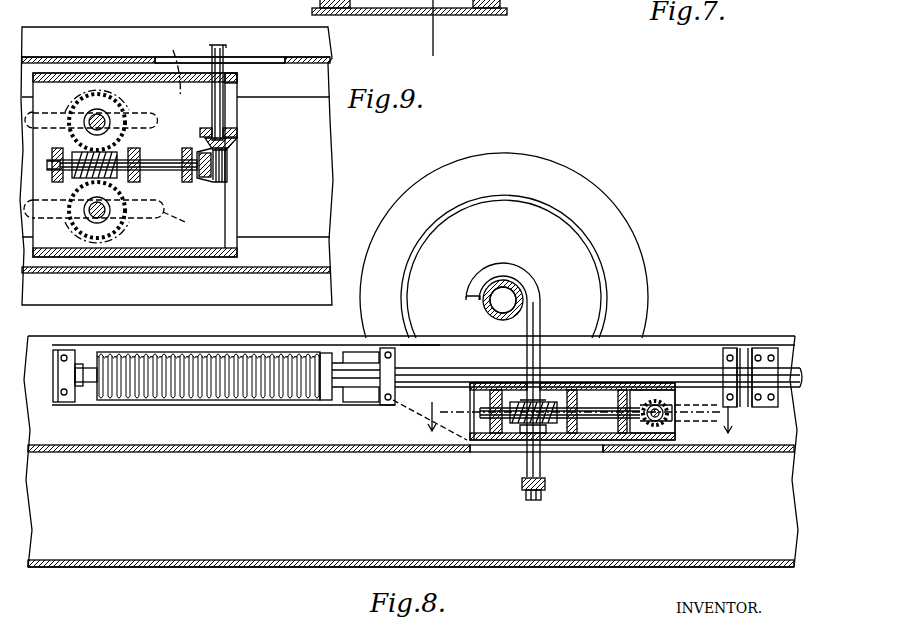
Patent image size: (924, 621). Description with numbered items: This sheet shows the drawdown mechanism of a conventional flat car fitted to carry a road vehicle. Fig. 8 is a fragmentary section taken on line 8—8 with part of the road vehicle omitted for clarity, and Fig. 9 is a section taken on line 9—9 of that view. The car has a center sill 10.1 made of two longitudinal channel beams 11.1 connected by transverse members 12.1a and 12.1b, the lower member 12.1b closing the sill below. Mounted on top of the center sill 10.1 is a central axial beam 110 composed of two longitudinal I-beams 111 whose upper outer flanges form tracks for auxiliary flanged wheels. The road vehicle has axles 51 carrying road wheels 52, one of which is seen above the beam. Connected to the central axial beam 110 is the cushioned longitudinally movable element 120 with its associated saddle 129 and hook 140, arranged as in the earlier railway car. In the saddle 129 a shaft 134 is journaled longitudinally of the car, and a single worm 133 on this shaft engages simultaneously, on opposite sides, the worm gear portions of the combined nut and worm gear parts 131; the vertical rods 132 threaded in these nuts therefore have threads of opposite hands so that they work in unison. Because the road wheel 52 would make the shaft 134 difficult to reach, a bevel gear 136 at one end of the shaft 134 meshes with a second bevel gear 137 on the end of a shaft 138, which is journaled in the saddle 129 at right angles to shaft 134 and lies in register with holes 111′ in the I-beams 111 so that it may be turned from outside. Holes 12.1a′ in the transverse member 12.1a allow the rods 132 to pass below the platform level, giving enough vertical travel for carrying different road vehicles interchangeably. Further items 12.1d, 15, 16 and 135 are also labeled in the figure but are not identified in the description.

In FIG. 9, the section line 8— 8 is at (414, 48).
In FIG. 8, the section line 9— 9 is at (570, 420).
In FIG. 9, the center sill 10.1 is at (481, 20).
In FIG. 8, the longitudinal channel beams 11.1 is at (411, 451).
In FIG. 8, the transverse member 12.1a is at (263, 449).
In FIG. 9, the holes 12.1a′ is at (166, 64).
In FIG. 8, the holes 12.1a′ is at (587, 453).
In FIG. 9, the transverse member 12.1b is at (428, 16).
In FIG. 8, the transverse member 12.1b is at (222, 567).
In FIG. 9, the guide slot 12.1d is at (128, 177).
In FIG. 8, the bracket 15 is at (105, 408).
In FIG. 8, the mounting bracket 16 is at (765, 348).
In FIG. 8, the axles 51 is at (523, 296).
In FIG. 8, the road wheels 52 is at (422, 184).
In FIG. 9, the central axial beam 110 is at (318, 42).
In FIG. 9, the longitudinal I-beams 111 is at (70, 55).
In FIG. 8, the longitudinal I-beams 111 is at (415, 337).
In FIG. 9, the holes 111′ is at (278, 48).
In FIG. 8, the holes 111′ is at (710, 420).
In FIG. 8, the cushioned longitudinally movable element 120 is at (222, 415).
In FIG. 9, the saddle 129 is at (230, 202).
In FIG. 9, the combined nut and worm gear parts 131 is at (112, 115).
In FIG. 8, the combined nut and worm gear parts 131 is at (546, 436).
In FIG. 9, the vertical rods 132 is at (85, 118).
In FIG. 8, the vertical rods 132 is at (540, 347).
In FIG. 9, the worm 133 is at (95, 180).
In FIG. 8, the worm 133 is at (523, 424).
In FIG. 9, the shaft 134 is at (164, 157).
In FIG. 8, the nut 135 is at (522, 490).
In FIG. 9, the bevel gear 136 is at (206, 194).
In FIG. 8, the bevel gear 136 is at (622, 384).
In FIG. 9, the second bevel gear 137 is at (216, 175).
In FIG. 8, the second bevel gear 137 is at (670, 410).
In FIG. 9, the shaft 138 is at (227, 114).
In FIG. 8, the shaft 138 is at (657, 417).
In FIG. 8, the hook 140 is at (490, 268).